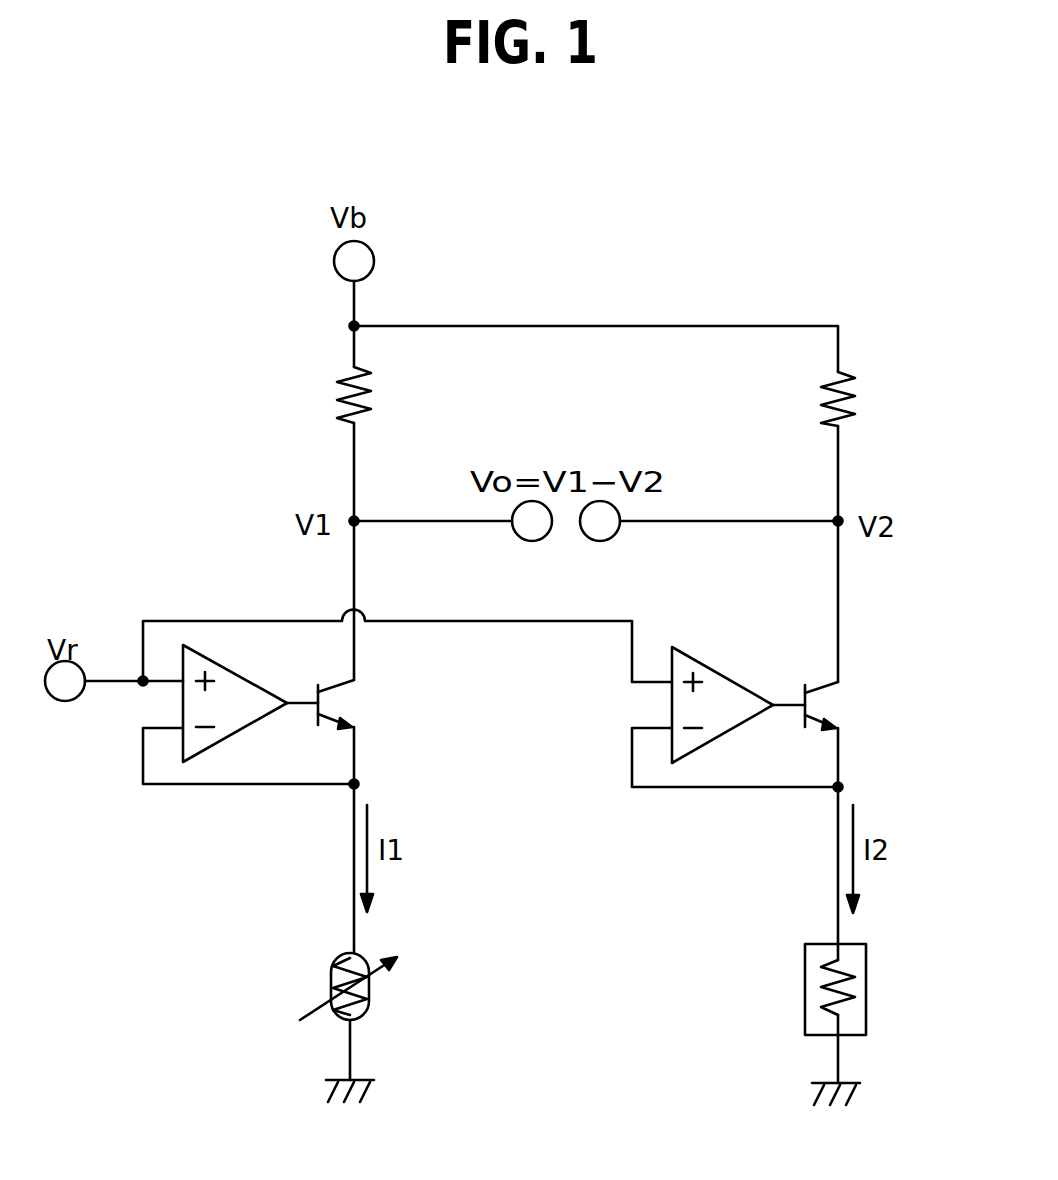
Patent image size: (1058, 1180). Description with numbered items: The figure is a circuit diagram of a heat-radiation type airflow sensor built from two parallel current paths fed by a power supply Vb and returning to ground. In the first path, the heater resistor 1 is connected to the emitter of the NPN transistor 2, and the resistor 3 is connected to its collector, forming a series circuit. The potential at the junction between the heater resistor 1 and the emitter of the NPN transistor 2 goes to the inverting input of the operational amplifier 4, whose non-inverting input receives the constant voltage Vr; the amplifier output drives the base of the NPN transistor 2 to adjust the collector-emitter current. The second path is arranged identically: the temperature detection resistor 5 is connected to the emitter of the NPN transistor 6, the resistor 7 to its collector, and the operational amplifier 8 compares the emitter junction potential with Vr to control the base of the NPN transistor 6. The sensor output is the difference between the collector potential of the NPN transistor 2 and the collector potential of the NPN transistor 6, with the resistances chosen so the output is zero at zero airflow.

The heater resistor 1 is at (370, 1000).
The NPN transistor 2 is at (340, 690).
The resistor 3 is at (366, 379).
The operational amplifier 4 is at (236, 672).
The temperature detection resistor 5 is at (866, 955).
The NPN transistor 6 is at (828, 688).
The resistor 7 is at (822, 386).
The operational amplifier 8 is at (733, 677).